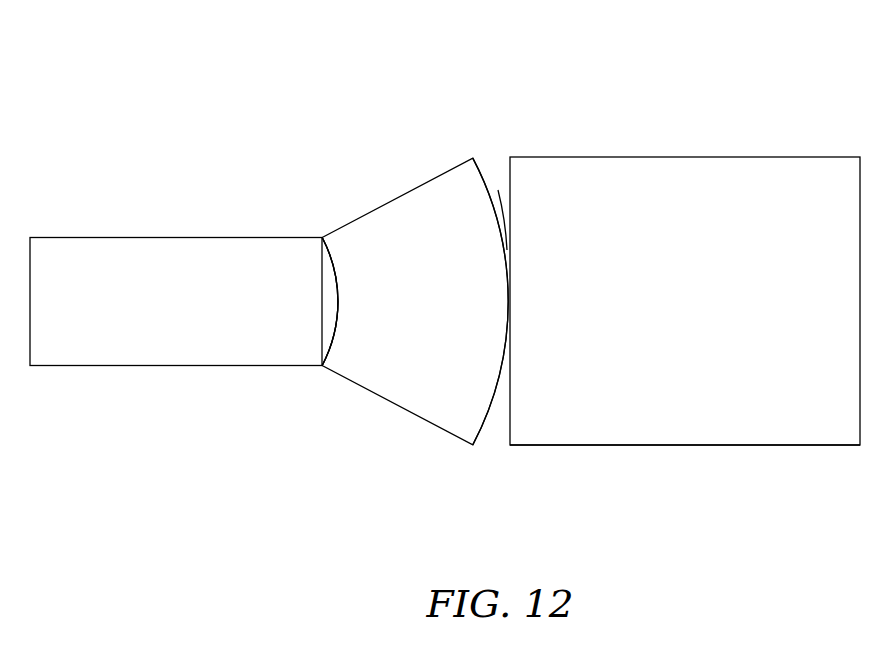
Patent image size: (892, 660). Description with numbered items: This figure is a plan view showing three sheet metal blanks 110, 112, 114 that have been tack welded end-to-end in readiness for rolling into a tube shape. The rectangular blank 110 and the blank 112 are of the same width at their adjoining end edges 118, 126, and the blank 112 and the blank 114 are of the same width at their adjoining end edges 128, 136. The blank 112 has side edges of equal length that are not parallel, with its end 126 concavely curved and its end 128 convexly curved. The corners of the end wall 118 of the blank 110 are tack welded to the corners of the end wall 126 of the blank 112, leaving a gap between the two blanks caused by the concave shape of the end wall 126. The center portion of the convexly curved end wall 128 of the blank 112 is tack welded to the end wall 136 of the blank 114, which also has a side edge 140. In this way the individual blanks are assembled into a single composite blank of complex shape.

The sheet metal blank 110 is at (120, 253).
The sheet metal blank 112 is at (412, 210).
The sheet metal blank 114 is at (650, 177).
The end 118 is at (327, 257).
The concavely curved end 126 is at (334, 331).
The convexly curved end 128 is at (484, 428).
The end 136 is at (509, 177).
The side edge 140 is at (749, 451).